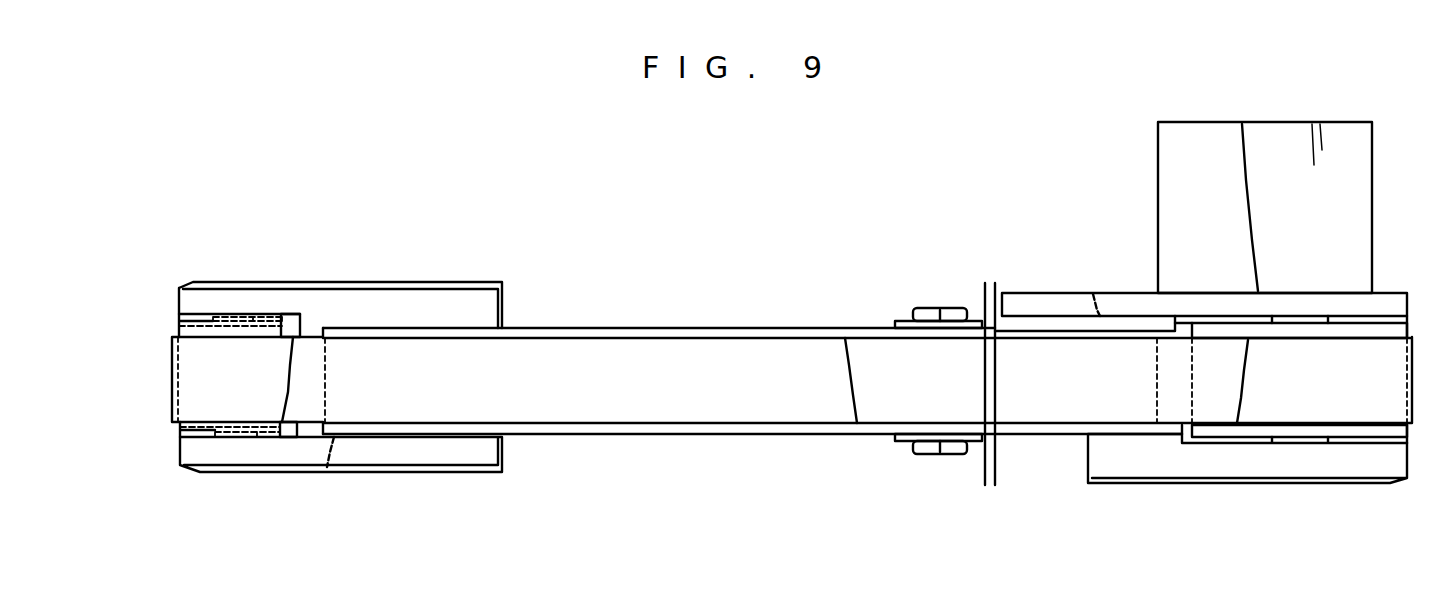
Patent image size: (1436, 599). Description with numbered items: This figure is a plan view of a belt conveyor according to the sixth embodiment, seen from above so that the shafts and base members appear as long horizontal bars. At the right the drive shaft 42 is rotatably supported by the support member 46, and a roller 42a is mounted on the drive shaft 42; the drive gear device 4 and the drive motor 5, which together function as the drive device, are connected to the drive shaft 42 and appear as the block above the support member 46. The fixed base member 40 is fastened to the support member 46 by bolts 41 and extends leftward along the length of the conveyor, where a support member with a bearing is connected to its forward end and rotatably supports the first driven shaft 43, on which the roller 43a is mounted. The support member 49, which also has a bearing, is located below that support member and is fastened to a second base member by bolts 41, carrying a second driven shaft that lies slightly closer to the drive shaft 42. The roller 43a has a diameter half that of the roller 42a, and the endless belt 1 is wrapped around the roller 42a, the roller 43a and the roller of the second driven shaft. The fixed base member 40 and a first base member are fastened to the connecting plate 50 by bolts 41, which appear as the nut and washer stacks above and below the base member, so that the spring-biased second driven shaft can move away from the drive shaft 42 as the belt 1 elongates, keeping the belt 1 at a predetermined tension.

The endless belt 1 is at (655, 405).
The drive gear device 4 is at (1348, 261).
The drive motor 5 is at (1175, 158).
The fixed base member 40 is at (535, 432).
The bolts 41 is at (957, 308).
The drive shaft 42 is at (1300, 440).
The roller 42a is at (1378, 430).
The first driven shaft 43 is at (233, 437).
The roller 43a is at (182, 428).
The support member 46 is at (1072, 313).
The support member 49 is at (390, 317).
The connecting plate 50 is at (903, 321).